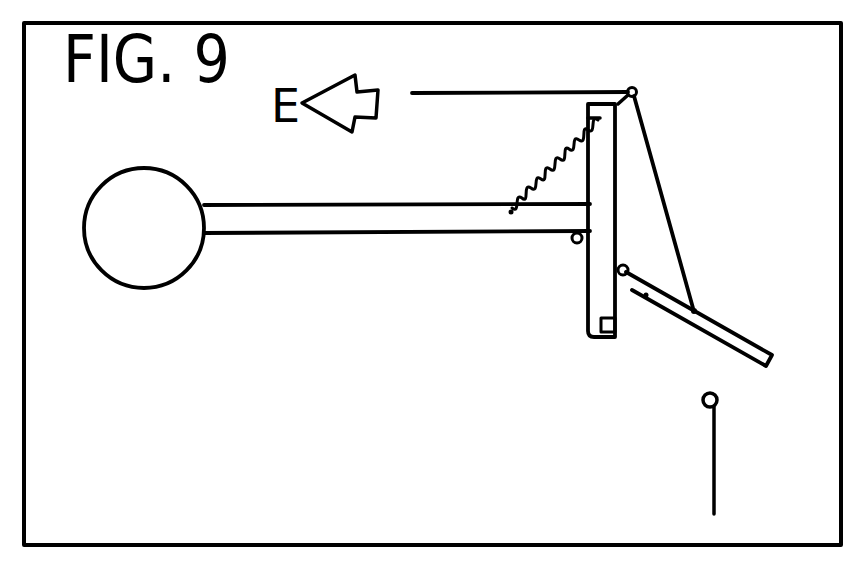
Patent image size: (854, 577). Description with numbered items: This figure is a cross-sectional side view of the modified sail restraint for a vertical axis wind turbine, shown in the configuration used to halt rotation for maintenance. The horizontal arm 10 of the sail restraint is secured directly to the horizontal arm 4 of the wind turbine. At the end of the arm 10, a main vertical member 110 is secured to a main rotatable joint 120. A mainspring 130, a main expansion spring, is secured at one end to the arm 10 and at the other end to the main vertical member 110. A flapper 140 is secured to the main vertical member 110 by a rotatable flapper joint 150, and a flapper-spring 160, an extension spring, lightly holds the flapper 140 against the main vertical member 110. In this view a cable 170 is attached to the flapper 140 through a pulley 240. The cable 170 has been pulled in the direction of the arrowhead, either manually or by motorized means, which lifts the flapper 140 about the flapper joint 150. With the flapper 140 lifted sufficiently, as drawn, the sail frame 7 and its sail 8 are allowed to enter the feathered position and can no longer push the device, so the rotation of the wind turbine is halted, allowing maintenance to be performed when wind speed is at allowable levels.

The horizontal arm of the wind turbine 4 is at (93, 262).
The arm 10 is at (303, 204).
The main vertical member 110 is at (614, 157).
The main rotatable joint 120 is at (568, 242).
The mainspring 130 is at (548, 150).
The flapper 140 is at (694, 311).
The rotatable flapper joint 150 is at (628, 268).
The flapper-spring 160 is at (624, 308).
The cable 170 is at (478, 92).
The pulley 240 is at (634, 88).
The sail frame 7 is at (703, 394).
The sail 8 is at (711, 466).